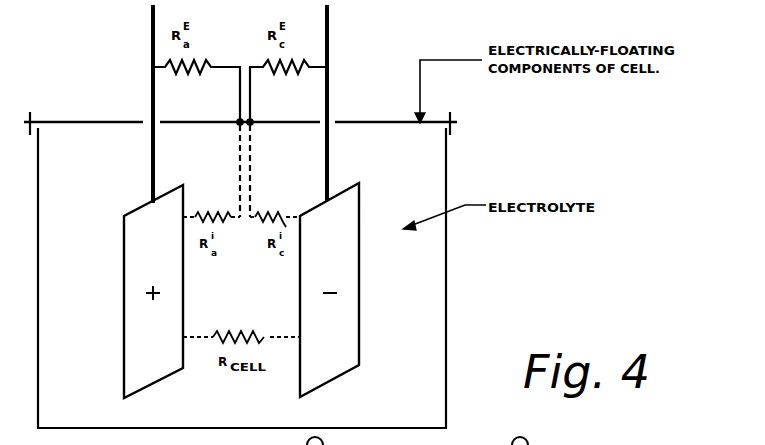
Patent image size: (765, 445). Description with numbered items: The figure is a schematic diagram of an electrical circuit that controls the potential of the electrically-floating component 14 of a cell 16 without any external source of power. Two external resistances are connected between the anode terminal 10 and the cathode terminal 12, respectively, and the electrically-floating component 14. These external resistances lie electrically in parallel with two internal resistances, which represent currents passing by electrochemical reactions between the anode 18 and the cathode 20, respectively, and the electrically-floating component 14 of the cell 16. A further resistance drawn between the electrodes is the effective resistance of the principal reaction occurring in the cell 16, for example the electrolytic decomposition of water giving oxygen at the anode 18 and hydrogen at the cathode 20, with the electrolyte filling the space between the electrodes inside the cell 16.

The anode terminal 10 is at (151, 27).
The cathode terminal 12 is at (329, 32).
The electrically-floating component 14 is at (98, 121).
The cell 16 is at (447, 332).
The anode 18 is at (336, 378).
The cathode 20 is at (157, 385).